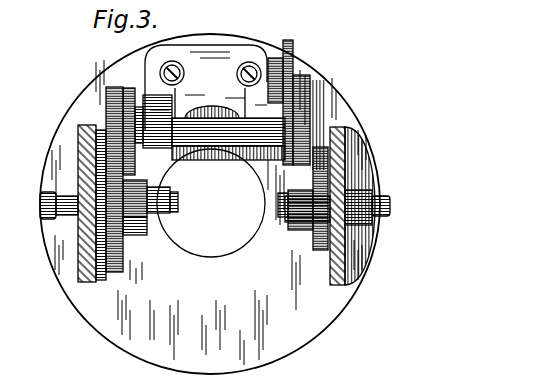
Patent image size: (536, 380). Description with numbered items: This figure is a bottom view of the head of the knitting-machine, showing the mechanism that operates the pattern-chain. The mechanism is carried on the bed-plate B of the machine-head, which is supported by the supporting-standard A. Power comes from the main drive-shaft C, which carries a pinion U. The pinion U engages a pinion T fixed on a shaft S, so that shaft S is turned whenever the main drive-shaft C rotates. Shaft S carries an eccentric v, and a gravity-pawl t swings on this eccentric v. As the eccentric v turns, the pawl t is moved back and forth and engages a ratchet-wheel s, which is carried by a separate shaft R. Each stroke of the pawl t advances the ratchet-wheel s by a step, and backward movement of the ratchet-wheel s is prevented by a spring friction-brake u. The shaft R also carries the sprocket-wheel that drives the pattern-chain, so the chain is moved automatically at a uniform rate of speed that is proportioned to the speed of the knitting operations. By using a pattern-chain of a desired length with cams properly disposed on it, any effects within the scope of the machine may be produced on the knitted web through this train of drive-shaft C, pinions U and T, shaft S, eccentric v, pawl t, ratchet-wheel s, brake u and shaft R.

The bed-plate B is at (210, 204).
The shaft R is at (40, 205).
The supporting-standard A is at (90, 282).
The eccentric v is at (106, 128).
The gravity-pawl t is at (135, 142).
The ratchet-wheel s is at (123, 235).
The spring friction-brake u is at (110, 240).
The shaft S is at (216, 134).
The pinion T is at (320, 100).
The pinion U is at (290, 232).
The main drive-shaft C is at (390, 208).